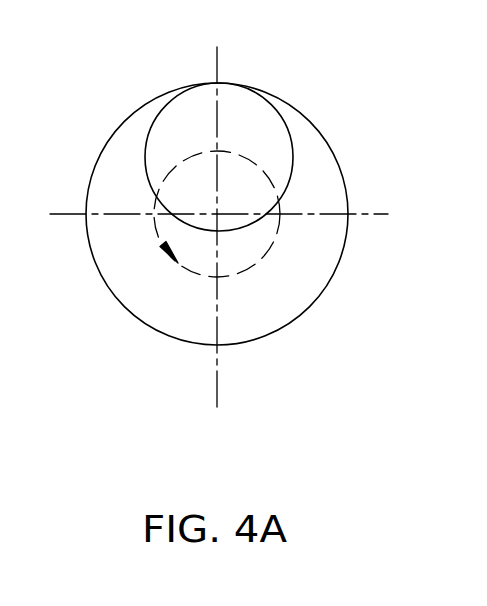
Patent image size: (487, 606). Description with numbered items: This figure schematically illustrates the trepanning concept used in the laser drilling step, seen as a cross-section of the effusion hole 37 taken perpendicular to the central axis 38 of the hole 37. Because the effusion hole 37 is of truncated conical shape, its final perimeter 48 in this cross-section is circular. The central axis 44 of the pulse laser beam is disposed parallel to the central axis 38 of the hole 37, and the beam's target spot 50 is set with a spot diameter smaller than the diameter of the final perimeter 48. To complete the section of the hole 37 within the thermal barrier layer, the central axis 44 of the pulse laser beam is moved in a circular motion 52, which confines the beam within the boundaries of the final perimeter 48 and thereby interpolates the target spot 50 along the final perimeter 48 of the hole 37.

The effusion hole 37 is at (313, 265).
The central axis of the hole 38 is at (217, 214).
The central axis of the pulse laser beam 44 is at (250, 124).
The final perimeter 48 is at (157, 328).
The target spot 50 is at (293, 147).
The circular motion 52 is at (155, 216).